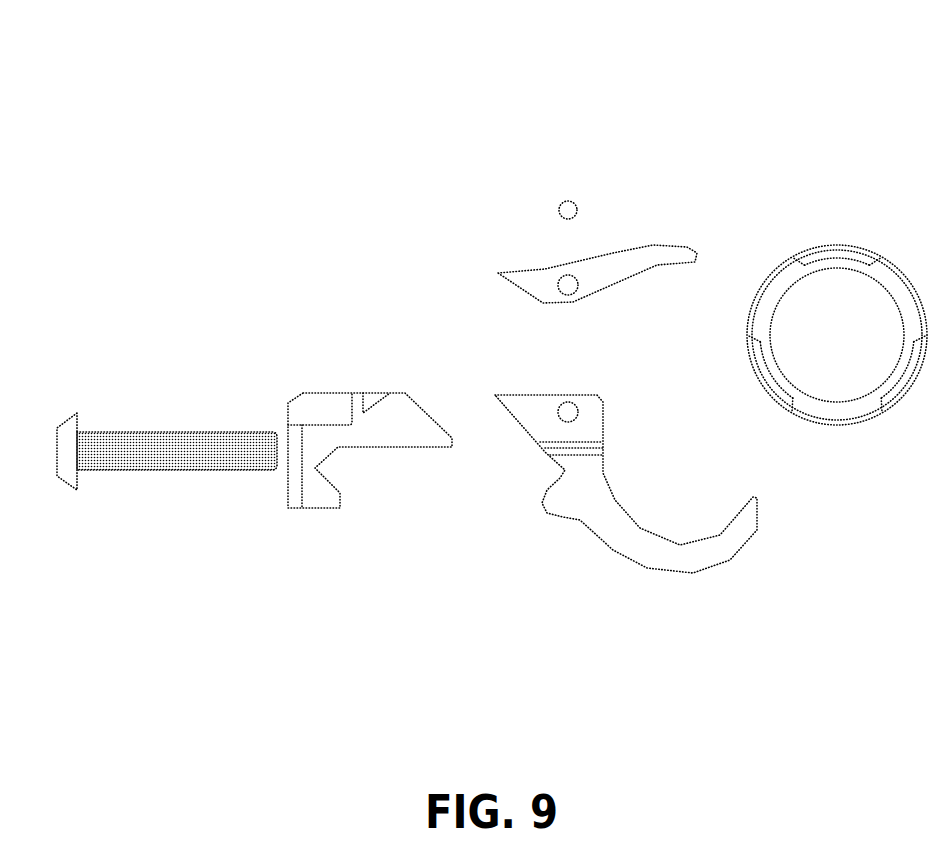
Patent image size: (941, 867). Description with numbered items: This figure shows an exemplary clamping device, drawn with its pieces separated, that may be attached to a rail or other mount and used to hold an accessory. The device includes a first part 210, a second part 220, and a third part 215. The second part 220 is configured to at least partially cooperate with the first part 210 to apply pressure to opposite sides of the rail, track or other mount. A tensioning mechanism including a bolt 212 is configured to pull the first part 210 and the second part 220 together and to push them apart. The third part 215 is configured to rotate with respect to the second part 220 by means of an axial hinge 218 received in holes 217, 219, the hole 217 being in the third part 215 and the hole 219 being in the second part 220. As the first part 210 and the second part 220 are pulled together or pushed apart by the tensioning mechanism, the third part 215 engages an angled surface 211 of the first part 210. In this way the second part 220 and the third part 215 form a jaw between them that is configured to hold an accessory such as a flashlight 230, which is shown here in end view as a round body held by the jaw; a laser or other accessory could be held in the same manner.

The first part 210 is at (313, 400).
The angled surface 211 is at (418, 407).
The bolt 212 is at (110, 443).
The third part 215 is at (612, 250).
The hole 217 is at (568, 285).
The axial hinge 218 is at (560, 200).
The hole 219 is at (567, 410).
The second part 220 is at (638, 550).
The flashlight 230 is at (883, 397).